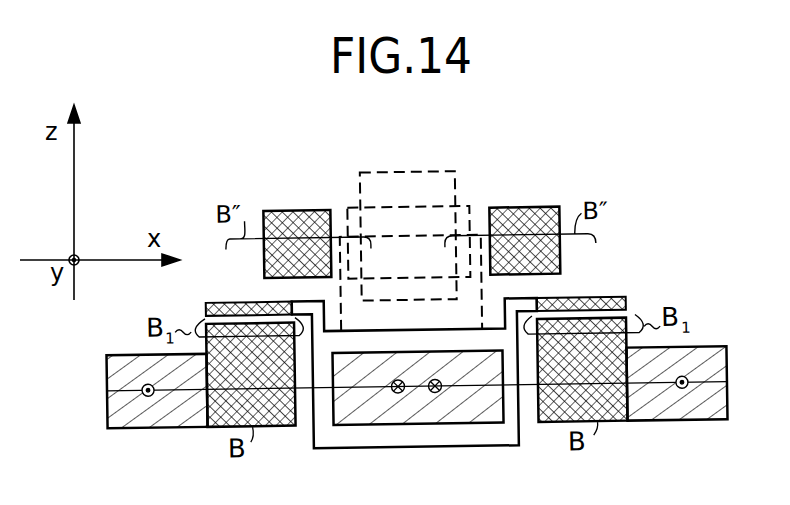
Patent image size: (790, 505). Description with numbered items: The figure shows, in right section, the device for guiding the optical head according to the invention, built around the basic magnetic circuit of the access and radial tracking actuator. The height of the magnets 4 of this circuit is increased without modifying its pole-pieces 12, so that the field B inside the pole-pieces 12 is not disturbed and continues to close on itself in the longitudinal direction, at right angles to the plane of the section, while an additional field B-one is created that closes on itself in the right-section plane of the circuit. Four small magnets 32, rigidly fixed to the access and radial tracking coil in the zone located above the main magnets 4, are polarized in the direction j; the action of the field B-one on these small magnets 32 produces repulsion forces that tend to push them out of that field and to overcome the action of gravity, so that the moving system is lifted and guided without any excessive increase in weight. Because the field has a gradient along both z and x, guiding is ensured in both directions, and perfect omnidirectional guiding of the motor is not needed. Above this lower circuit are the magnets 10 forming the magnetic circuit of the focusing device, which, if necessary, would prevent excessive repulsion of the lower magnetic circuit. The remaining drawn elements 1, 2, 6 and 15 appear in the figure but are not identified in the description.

The magnetic field region 1 is at (393, 180).
The coil region 2 is at (467, 204).
The magnets 4 is at (270, 425).
The frame 6 is at (394, 448).
The magnets 10 is at (305, 209).
The pole-pieces 12 is at (107, 386).
The core 15 is at (450, 414).
The small magnets 32 is at (212, 300).
The direction of polarization j is at (252, 300).